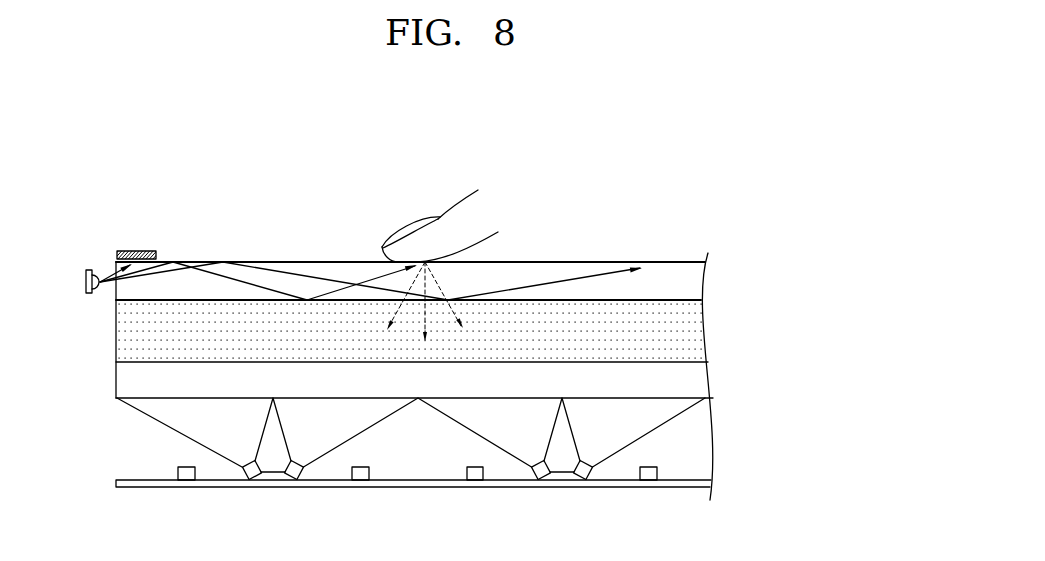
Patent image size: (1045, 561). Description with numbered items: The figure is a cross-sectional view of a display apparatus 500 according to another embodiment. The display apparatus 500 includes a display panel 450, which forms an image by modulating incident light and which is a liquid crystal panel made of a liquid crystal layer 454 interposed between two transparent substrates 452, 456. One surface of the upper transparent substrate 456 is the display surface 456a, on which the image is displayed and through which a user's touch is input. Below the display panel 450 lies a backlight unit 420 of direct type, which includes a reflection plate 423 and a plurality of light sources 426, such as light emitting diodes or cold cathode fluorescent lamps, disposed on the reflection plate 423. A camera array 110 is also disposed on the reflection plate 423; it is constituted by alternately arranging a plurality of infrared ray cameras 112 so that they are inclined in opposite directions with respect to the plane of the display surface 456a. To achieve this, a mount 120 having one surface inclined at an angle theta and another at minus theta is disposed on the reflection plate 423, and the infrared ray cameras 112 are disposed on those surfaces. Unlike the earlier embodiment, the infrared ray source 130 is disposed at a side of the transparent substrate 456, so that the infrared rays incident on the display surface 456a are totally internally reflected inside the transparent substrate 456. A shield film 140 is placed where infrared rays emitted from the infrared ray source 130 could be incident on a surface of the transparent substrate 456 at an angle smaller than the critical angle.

The display apparatus 500 is at (650, 199).
The display panel 450 is at (799, 247).
The transparent substrate 456 is at (697, 278).
The display surface 456a is at (670, 262).
The liquid crystal layer 454 is at (688, 328).
The transparent substrate 452 is at (690, 380).
The backlight unit 420 is at (797, 440).
The reflection plate 423 is at (707, 483).
The light sources 426 is at (657, 472).
The camera array 110 is at (236, 469).
The infrared ray cameras 112 is at (248, 479).
The mount 120 is at (275, 476).
The infrared ray source 130 is at (88, 294).
The shield film 140 is at (132, 250).